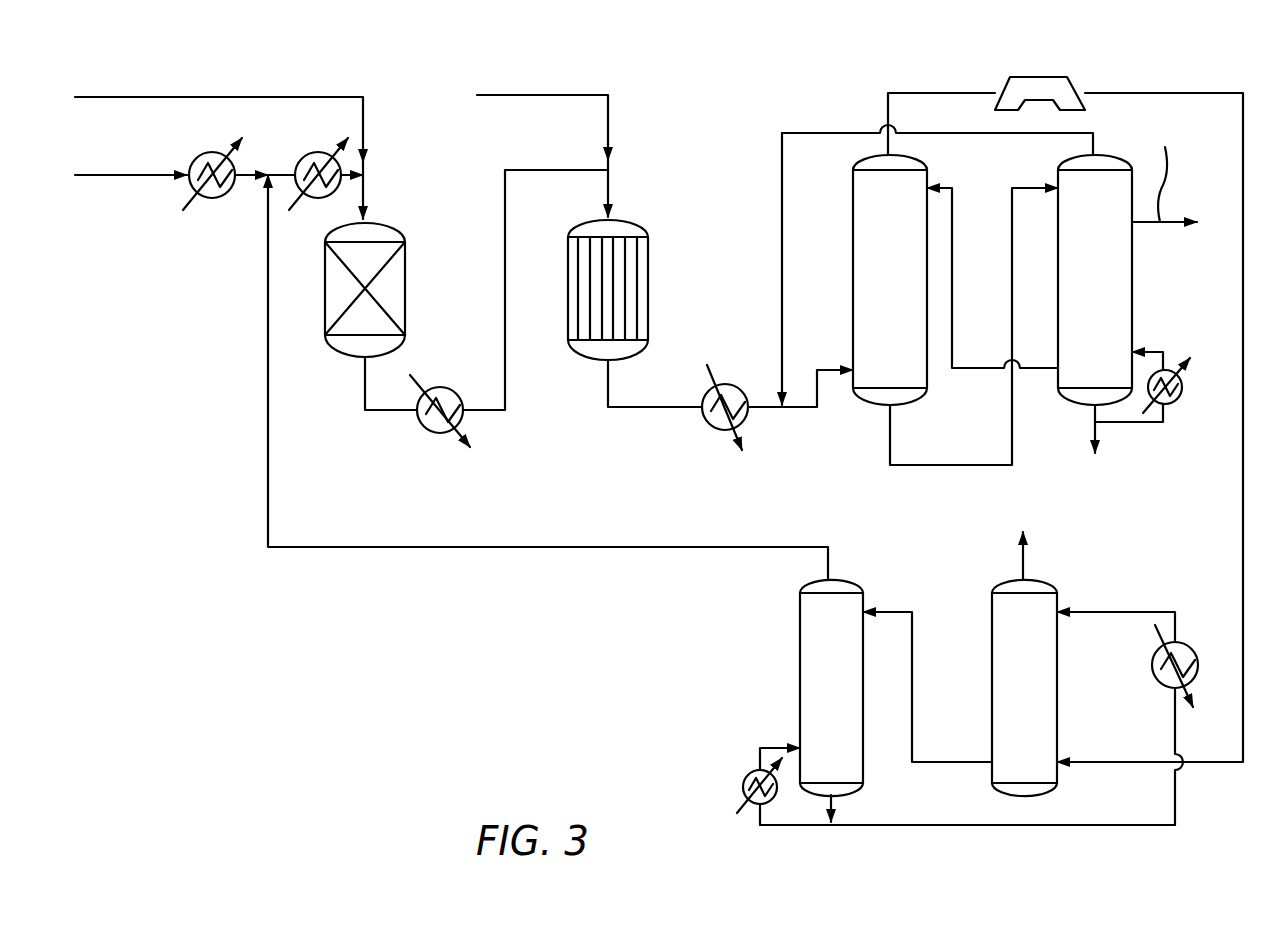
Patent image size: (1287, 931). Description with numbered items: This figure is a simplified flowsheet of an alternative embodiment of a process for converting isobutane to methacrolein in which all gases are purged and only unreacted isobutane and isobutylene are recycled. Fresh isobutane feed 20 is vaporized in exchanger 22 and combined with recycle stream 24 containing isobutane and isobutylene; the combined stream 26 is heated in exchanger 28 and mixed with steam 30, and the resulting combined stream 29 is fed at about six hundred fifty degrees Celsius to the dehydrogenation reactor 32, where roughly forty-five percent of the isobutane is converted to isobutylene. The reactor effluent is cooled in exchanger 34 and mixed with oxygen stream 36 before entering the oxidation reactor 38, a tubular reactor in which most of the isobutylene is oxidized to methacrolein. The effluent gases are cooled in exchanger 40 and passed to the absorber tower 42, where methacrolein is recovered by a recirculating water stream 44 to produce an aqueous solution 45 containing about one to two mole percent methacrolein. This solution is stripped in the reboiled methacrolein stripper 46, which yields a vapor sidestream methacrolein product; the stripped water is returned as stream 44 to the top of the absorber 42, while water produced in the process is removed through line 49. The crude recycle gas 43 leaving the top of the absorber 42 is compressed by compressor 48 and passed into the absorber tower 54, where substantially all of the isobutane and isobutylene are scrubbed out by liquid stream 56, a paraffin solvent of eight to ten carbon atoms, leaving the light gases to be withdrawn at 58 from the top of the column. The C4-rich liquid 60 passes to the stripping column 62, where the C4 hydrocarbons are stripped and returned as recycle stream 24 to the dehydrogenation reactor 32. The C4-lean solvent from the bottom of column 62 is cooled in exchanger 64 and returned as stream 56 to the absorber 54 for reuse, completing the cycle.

The fresh isobutane feed 20 is at (142, 177).
The exchanger 22 is at (212, 198).
The recycle stream 24 is at (268, 372).
The combined stream 26 is at (282, 174).
The exchanger 28 is at (307, 199).
The combined stream 29 is at (366, 192).
The steam 30 is at (178, 97).
The dehydrogenation reactor 32 is at (405, 285).
The exchanger 34 is at (420, 436).
The oxygen stream 36 is at (611, 120).
The oxidation reactor 38 is at (651, 278).
The exchanger 40 is at (706, 430).
The absorber tower 42 is at (853, 225).
The crude recycle gas 43 is at (911, 93).
The recirculating water stream 44 is at (953, 260).
The aqueous methacrolein solution 45 is at (975, 465).
The methacrolein stripper 46 is at (1133, 280).
The compressor 48 is at (1070, 85).
The water removal stream 49 is at (1092, 432).
The absorber tower 54 is at (1058, 673).
The liquid stream 56 is at (1115, 612).
The light gas withdrawal 58 is at (1024, 557).
The C4-rich liquid 60 is at (912, 690).
The stripping column 62 is at (800, 673).
The exchanger 64 is at (1195, 647).